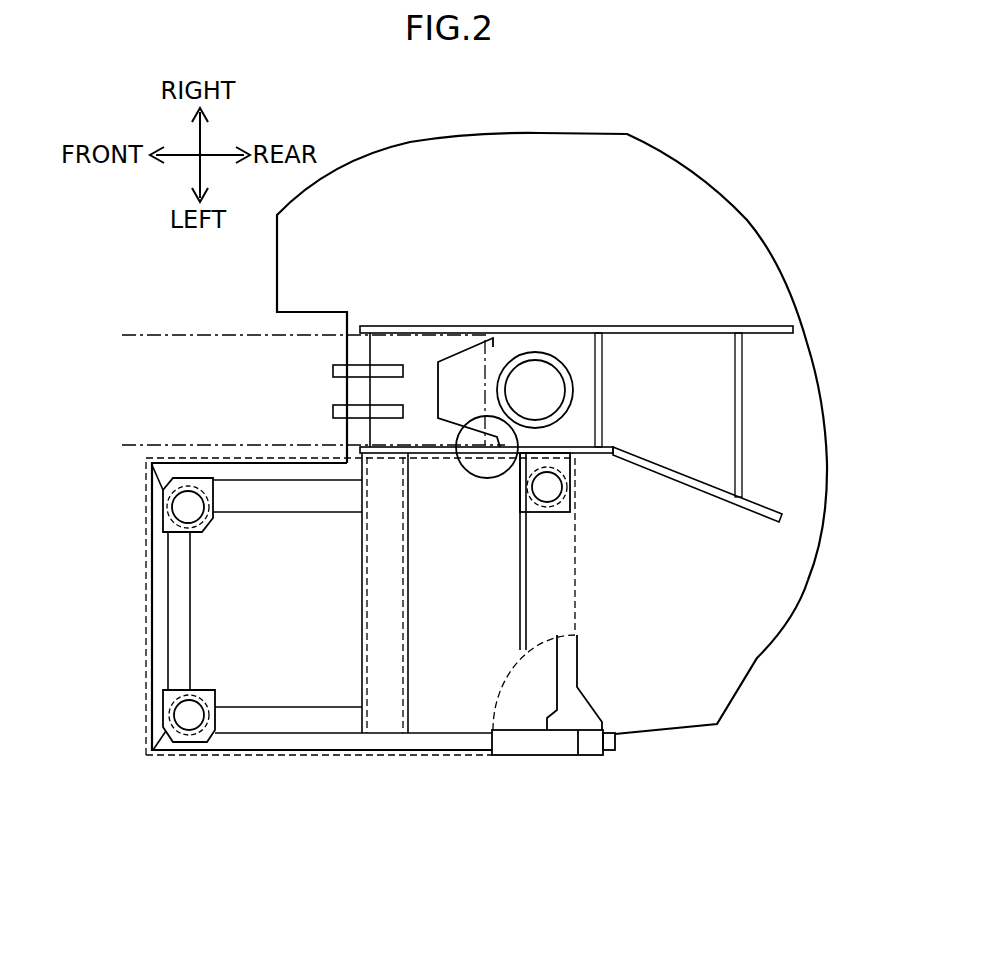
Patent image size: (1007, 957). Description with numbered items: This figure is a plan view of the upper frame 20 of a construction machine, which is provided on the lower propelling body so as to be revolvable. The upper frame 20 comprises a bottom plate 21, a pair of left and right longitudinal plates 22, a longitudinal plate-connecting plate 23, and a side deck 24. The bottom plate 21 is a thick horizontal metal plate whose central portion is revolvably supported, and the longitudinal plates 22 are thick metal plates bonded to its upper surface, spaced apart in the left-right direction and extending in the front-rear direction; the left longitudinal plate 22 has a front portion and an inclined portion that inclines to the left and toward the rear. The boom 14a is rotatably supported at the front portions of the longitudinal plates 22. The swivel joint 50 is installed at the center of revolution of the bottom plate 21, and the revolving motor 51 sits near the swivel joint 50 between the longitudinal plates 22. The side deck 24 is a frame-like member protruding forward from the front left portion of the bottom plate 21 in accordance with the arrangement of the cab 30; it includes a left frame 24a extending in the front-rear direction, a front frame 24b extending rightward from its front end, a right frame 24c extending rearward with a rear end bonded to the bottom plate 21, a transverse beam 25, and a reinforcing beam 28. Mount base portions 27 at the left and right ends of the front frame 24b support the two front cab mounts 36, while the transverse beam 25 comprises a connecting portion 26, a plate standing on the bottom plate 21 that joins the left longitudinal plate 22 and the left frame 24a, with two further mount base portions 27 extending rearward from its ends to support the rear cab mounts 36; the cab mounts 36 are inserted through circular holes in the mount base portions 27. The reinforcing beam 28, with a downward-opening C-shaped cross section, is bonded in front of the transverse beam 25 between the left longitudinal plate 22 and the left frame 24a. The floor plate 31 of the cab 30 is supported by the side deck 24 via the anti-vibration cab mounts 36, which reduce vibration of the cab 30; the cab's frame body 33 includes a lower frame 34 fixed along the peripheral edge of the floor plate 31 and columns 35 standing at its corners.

The boom 14a is at (212, 333).
The upper frame 20 is at (775, 225).
The bottom plate 21 is at (757, 658).
The longitudinal plate 22 is at (652, 326).
The longitudinal plate-connecting plate 23 is at (603, 393).
The side deck 24 is at (278, 619).
The left frame 24a is at (447, 745).
The front frame 24b is at (150, 603).
The right frame 24c is at (262, 470).
The transverse beam 25 is at (514, 540).
The connecting portion 26 is at (522, 578).
The mount base portion 27 is at (360, 597).
The reinforcing beam 28 is at (412, 625).
The cab 30 is at (140, 468).
The floor plate 31 is at (548, 658).
The frame body 33 is at (516, 764).
The lower frame 34 is at (570, 686).
The column 35 is at (591, 757).
The cab mount 36 is at (163, 503).
The swivel joint 50 is at (460, 470).
The revolving motor 51 is at (535, 352).